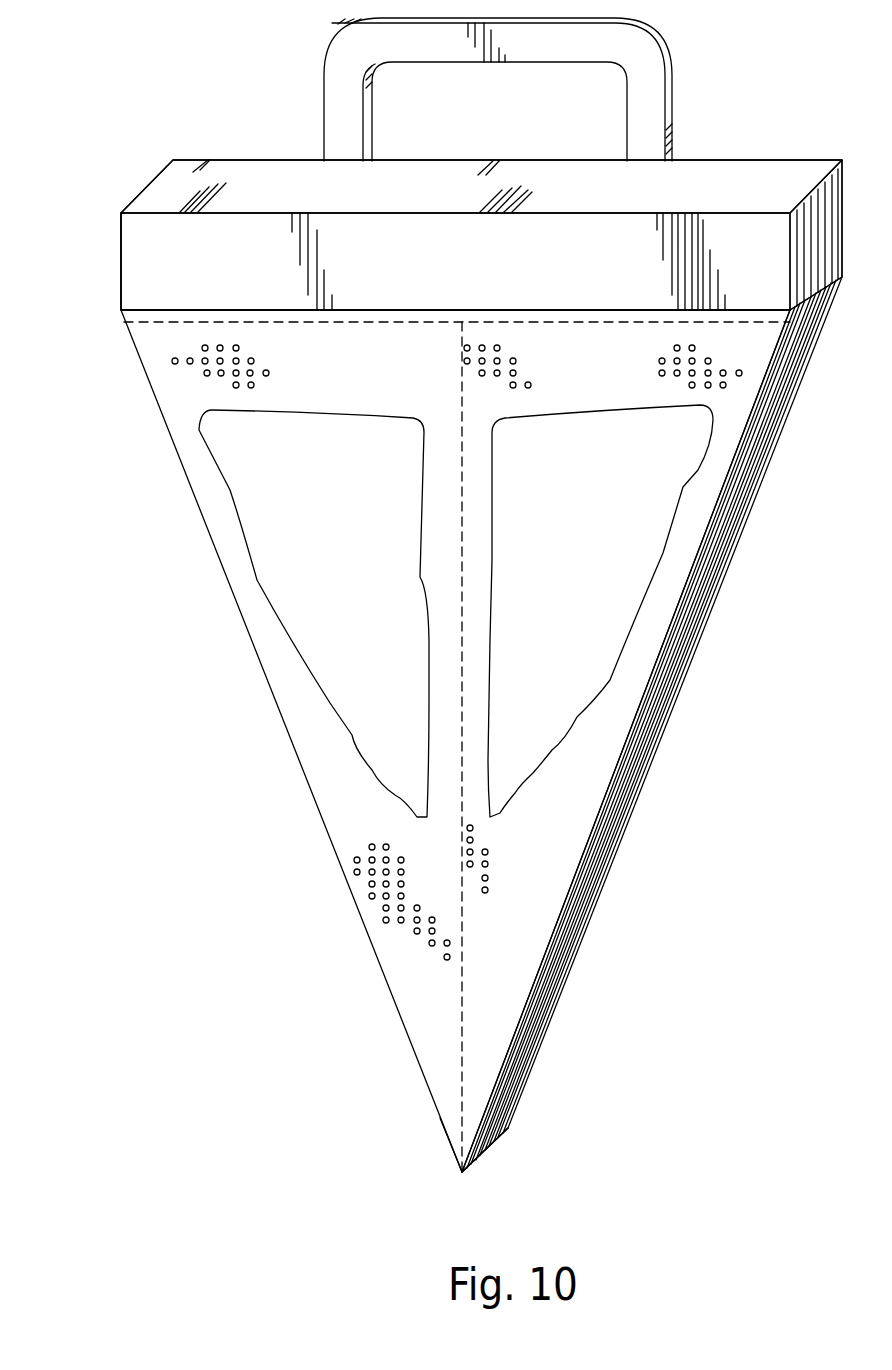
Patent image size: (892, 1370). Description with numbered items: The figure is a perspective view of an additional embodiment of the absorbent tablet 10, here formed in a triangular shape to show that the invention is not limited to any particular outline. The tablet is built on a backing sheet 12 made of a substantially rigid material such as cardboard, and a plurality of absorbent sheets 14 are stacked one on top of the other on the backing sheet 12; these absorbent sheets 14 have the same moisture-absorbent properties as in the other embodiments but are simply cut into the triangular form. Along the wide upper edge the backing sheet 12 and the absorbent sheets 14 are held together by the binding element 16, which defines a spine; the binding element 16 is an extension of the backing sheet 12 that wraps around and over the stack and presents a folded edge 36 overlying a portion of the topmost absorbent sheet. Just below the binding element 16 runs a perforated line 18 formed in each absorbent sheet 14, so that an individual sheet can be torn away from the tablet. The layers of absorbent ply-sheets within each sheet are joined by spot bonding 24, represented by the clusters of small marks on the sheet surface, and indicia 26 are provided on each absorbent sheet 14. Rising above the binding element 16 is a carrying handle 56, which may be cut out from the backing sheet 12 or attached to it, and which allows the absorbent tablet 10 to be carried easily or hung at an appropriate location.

The absorbent tablet 10 is at (236, 148).
The backing sheet 12 is at (693, 666).
The absorbent sheets 14 is at (488, 1139).
The binding element 16 is at (143, 190).
The perforated line 18 is at (590, 322).
The spot bonding 24 is at (175, 358).
The indicia 26 is at (361, 578).
The folded edge 36 is at (243, 281).
The carrying handle 56 is at (660, 107).